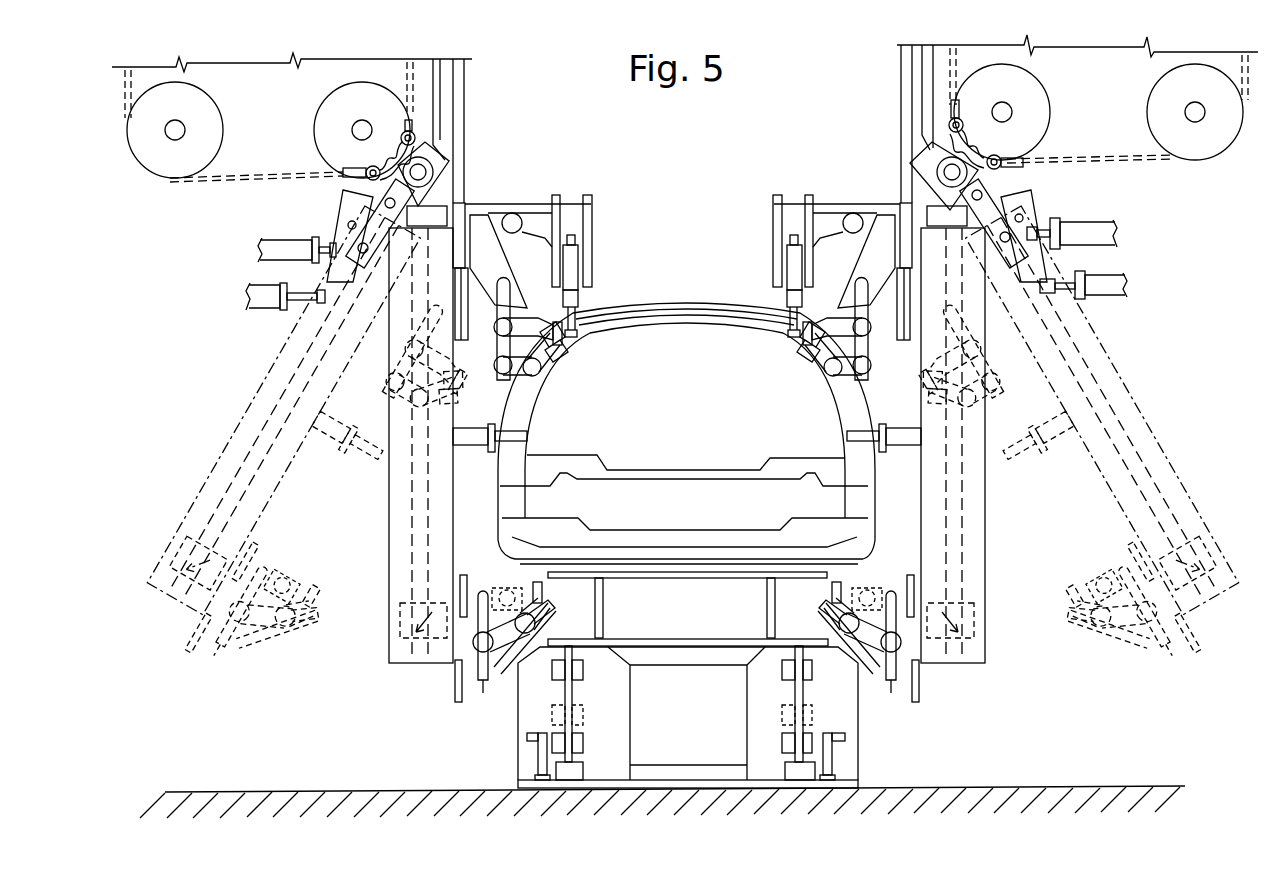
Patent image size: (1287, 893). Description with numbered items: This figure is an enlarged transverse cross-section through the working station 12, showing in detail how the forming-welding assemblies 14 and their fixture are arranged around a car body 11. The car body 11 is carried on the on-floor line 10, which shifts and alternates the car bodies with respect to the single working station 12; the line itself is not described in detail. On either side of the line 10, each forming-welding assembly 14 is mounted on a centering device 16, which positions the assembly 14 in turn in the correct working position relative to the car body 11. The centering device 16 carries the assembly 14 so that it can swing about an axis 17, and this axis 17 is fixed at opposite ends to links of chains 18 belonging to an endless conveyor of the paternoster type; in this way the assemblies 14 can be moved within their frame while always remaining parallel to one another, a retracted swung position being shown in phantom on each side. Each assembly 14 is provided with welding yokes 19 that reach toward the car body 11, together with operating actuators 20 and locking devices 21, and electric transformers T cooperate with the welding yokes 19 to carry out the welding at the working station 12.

The on-floor line 10 is at (692, 745).
The car body 11 is at (680, 336).
The working station 12 is at (764, 150).
The forming-welding assembly 14 is at (236, 428).
The centering device 16 is at (454, 180).
The axis 17 is at (424, 168).
The chain 18 is at (222, 179).
The welding yoke 19 is at (499, 372).
The operating actuator 20 is at (485, 674).
The locking device 21 is at (578, 296).